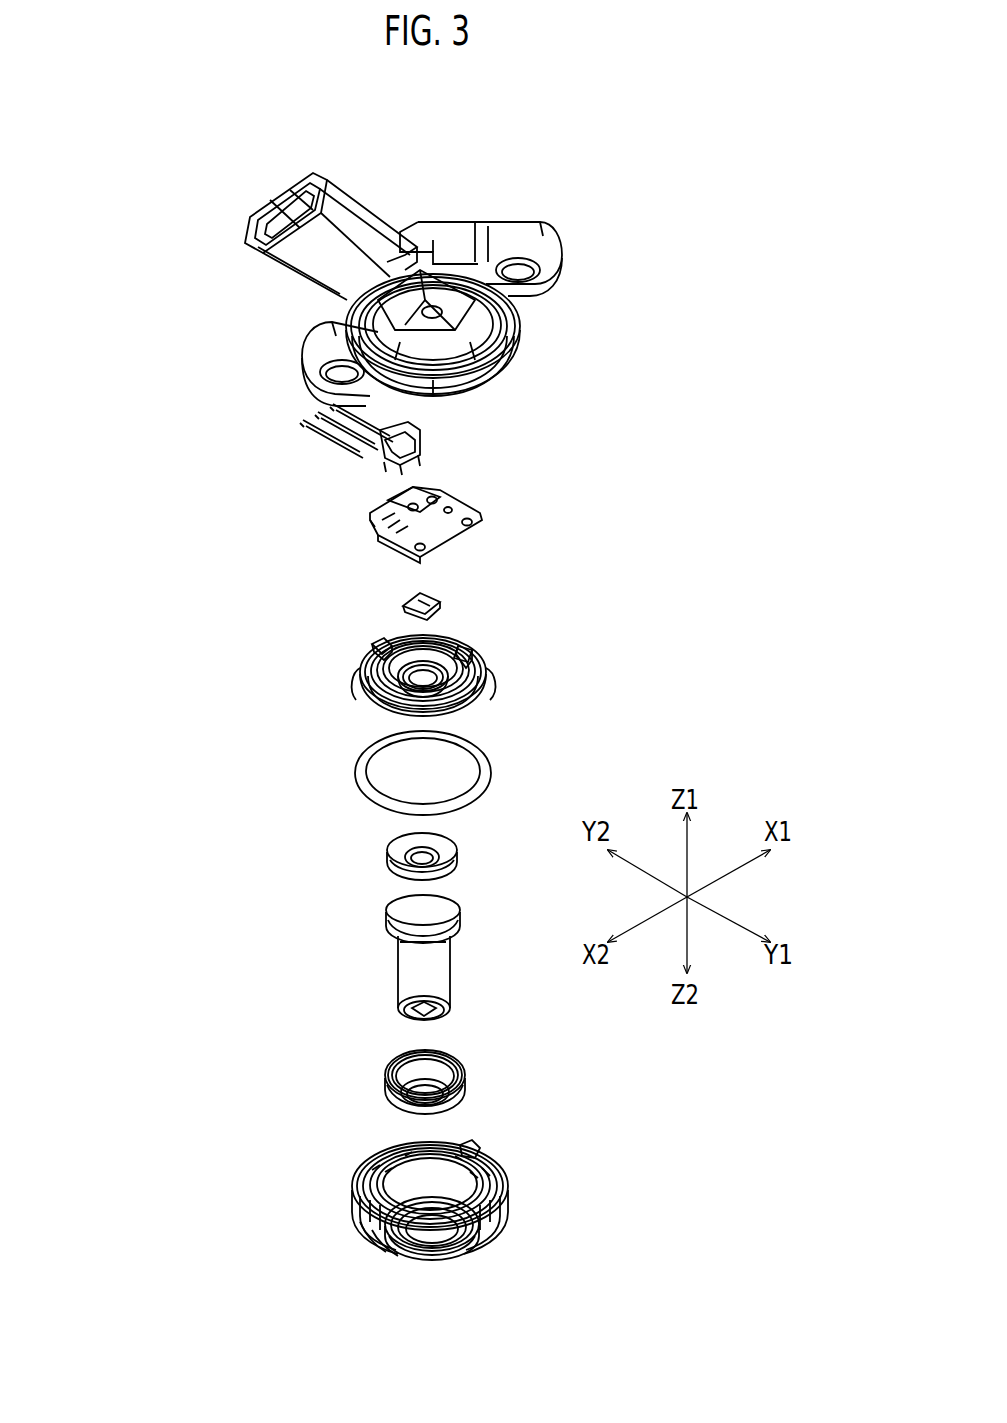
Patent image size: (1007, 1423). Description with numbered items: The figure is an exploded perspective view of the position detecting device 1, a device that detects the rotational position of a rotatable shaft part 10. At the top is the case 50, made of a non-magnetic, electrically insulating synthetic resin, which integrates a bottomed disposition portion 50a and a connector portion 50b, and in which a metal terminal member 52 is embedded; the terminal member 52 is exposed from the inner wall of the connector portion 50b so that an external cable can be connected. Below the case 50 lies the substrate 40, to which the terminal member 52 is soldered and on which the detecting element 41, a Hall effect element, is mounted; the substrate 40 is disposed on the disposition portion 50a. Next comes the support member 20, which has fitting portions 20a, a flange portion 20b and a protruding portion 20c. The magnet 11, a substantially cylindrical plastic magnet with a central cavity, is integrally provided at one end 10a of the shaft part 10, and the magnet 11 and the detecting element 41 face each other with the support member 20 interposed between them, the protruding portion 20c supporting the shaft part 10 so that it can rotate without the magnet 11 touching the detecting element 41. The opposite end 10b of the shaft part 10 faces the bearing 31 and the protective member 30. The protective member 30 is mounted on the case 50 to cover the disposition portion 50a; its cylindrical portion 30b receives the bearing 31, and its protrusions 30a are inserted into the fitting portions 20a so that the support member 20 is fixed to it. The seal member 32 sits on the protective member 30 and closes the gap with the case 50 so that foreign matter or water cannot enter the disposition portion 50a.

The position detecting device 1 is at (262, 150).
The case 50 is at (565, 230).
The disposition portion 50a is at (468, 342).
The connector portion 50b is at (265, 200).
The terminal member 52 is at (290, 447).
The substrate 40 is at (500, 517).
The detecting element 41 is at (366, 578).
The support member 20 is at (243, 660).
The fitting portions 20a is at (380, 650).
The flange portion 20b is at (490, 680).
The protruding portion 20c is at (400, 712).
The seal member 32 is at (335, 773).
The magnet 11 is at (335, 845).
The shaft part 10 is at (358, 953).
The one end of the shaft part 10a is at (393, 910).
The shaft end 10b is at (400, 1005).
The bearing 31 is at (355, 1072).
The protective member 30 is at (505, 1232).
The protrusions 30a is at (468, 1148).
The cylindrical portion 30b is at (395, 1222).